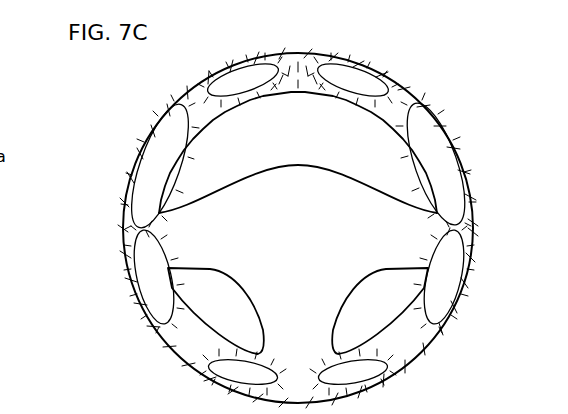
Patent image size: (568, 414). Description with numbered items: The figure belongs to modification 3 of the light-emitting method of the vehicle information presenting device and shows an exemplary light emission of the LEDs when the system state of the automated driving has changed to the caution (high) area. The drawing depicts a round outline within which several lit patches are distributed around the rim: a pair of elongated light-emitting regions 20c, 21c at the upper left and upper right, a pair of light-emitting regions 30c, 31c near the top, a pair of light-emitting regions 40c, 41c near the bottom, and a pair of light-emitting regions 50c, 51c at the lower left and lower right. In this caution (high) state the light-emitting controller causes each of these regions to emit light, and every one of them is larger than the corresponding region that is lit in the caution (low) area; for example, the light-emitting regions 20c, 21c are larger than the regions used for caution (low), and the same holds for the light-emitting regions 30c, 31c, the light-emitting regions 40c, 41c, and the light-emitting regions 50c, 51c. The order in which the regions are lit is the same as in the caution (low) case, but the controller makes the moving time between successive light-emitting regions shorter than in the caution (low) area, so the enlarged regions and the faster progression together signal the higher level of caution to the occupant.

The modification 3 of light-emitting method 3 is at (291, 53).
The light-emitting region 20c is at (138, 158).
The light-emitting region 21c is at (459, 158).
The light-emitting region 30c is at (258, 98).
The light-emitting region 31c is at (338, 98).
The light-emitting region 40c is at (264, 364).
The light-emitting region 41c is at (324, 362).
The light-emitting region 50c is at (136, 283).
The light-emitting region 51c is at (463, 284).